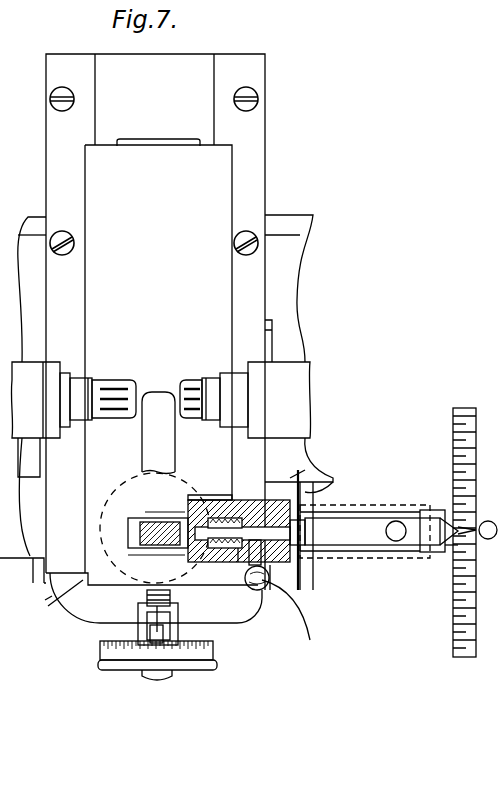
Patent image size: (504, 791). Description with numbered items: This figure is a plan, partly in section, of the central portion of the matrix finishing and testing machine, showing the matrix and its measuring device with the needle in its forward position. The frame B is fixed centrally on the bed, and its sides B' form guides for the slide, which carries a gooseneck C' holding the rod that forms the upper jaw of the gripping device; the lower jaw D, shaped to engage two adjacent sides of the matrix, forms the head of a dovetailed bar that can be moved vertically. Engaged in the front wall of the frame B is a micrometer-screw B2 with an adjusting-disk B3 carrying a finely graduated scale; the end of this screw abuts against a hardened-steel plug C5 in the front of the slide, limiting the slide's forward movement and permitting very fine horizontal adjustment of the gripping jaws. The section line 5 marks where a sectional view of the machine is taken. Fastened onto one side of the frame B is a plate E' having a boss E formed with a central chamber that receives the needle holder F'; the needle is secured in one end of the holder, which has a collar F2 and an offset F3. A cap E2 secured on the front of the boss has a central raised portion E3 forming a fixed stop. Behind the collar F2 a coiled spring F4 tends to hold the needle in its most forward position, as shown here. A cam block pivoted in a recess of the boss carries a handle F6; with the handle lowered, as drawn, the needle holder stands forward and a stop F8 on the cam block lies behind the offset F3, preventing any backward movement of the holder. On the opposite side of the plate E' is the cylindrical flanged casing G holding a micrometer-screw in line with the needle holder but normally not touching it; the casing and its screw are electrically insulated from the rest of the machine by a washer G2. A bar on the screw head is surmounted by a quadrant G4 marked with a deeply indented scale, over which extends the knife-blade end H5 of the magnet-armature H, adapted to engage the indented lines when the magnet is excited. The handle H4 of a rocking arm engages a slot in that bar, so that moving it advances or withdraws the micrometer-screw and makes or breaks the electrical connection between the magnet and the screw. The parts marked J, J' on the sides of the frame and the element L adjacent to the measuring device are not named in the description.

The frame B is at (146, 341).
The sides of frame B' is at (166, 363).
The second micrometer-screw B2 is at (140, 615).
The adjusting-disk B3 is at (215, 664).
The gooseneck C' is at (171, 433).
The hardened-steel plug C5 is at (147, 598).
The lower jaw D is at (70, 604).
The section line 5 is at (42, 599).
The boss E is at (239, 517).
The plate E' is at (301, 565).
The cap E2 is at (200, 500).
The central raised portion E3 is at (168, 505).
The needle holder F' is at (243, 578).
The collar F2 is at (292, 478).
The offset F3 is at (258, 592).
The coiled spring F4 is at (238, 562).
The handle F6 is at (294, 617).
The stop F8 is at (270, 590).
The cylindrical flanged casing G is at (325, 556).
The washer G2 is at (312, 492).
The quadrant G4 is at (453, 592).
The magnet-armature H is at (365, 512).
The handle H4 is at (481, 545).
The knife-blade end H5 is at (450, 545).
The knurled knob J is at (243, 396).
The knurled knob J' is at (73, 396).
The clamp L is at (130, 520).